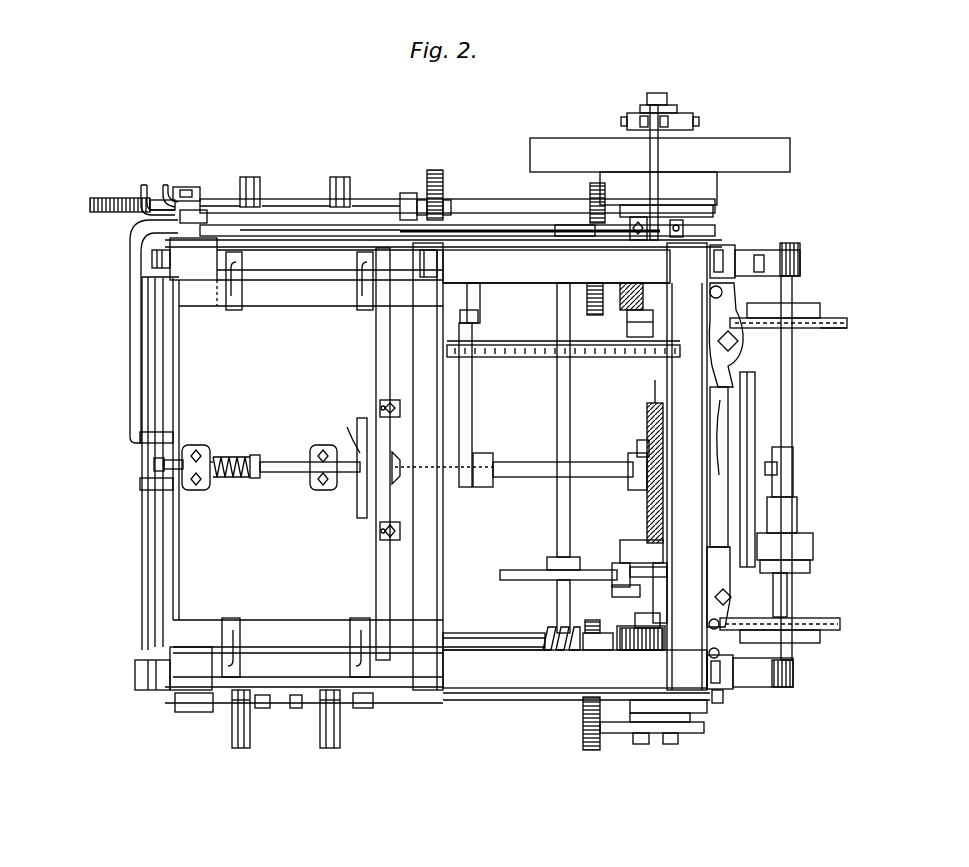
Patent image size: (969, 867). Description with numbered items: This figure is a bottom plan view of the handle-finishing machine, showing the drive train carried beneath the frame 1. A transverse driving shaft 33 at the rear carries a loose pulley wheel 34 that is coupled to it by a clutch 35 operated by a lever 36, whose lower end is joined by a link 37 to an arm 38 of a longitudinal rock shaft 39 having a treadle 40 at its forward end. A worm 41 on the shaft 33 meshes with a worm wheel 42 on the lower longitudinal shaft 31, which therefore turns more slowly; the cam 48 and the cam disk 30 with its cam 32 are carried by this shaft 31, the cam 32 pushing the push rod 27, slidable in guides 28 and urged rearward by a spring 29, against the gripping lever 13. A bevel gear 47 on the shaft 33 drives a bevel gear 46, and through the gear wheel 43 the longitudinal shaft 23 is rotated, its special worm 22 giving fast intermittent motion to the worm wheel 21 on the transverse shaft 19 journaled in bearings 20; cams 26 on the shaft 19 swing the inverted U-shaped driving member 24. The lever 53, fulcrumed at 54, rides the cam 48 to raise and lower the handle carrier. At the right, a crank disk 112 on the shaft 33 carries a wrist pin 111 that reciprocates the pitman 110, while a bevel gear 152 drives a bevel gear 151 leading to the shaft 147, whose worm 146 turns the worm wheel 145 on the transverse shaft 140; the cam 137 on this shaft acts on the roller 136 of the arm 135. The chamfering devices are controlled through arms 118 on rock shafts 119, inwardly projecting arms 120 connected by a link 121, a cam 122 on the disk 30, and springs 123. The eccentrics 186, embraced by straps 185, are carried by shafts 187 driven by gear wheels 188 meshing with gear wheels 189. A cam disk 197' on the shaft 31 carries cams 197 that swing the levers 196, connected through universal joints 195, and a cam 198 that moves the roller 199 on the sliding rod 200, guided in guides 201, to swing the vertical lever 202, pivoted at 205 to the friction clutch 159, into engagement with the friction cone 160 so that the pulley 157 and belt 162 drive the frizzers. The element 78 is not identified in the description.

The frame 1 is at (460, 670).
The gripping lever 13 is at (155, 467).
The transverse shaft 19 is at (148, 577).
The bearings 20 is at (165, 245).
The worm wheel 21 is at (100, 205).
The special worm 22 is at (152, 208).
The longitudinal shaft 23 is at (272, 210).
The inverted U-shaped driving member 24 is at (170, 462).
The cams 26 is at (137, 445).
The push rod 27 is at (285, 473).
The guides 28 is at (308, 460).
The spring 29 is at (228, 478).
The cam disk 30 is at (357, 505).
The lower longitudinal shaft 31 is at (520, 462).
The cam 32 is at (347, 427).
The driving shaft 33 is at (658, 378).
The pulley wheel 34 is at (733, 147).
The clutch 35 is at (718, 190).
The lever 36 is at (657, 112).
The link 37 is at (648, 150).
The arm 38 is at (645, 226).
The rock shaft 39 is at (500, 224).
The treadle 40 is at (158, 302).
The worm 41 is at (638, 450).
The worm wheel 42 is at (795, 246).
The gear wheel 43 is at (433, 170).
The bevel gear 46 is at (628, 300).
The bevel gear 47 is at (637, 310).
The cam 48 is at (470, 412).
The lever 53 is at (465, 320).
The fulcrum 54 is at (478, 283).
The right post 78 is at (665, 367).
The pitman 110 is at (638, 746).
The wrist pin 111 is at (610, 735).
The crank disk 112 is at (668, 746).
The arms 118 is at (232, 300).
The rock shafts 119 is at (300, 262).
The arms 120 is at (376, 352).
The link 121 is at (398, 478).
The cam 122 is at (390, 453).
The retractile springs 123 is at (383, 406).
The arm 135 is at (632, 591).
The roller 136 is at (660, 561).
The cam 137 is at (508, 570).
The transverse shaft 140 is at (557, 594).
The worm wheel 145 is at (546, 630).
The worm 146 is at (556, 655).
The longitudinal shaft 147 is at (484, 660).
The bevel gear 151 is at (614, 650).
The bevel gear 152 is at (660, 624).
The pulley 157 is at (830, 318).
The friction clutch 159 is at (795, 536).
The friction cone 160 is at (787, 578).
The endless belt 162 is at (836, 330).
The eccentric straps 185 is at (248, 177).
The eccentrics 186 is at (222, 725).
The shafts 187 is at (562, 230).
The gear wheels 188 is at (598, 183).
The gear wheels 189 is at (590, 300).
The universal joints 195 is at (725, 292).
The cam operated levers 196 is at (740, 362).
The cams 197 is at (698, 467).
The cam disk 197' is at (793, 469).
The cam 198 is at (792, 423).
The roller 199 is at (800, 561).
The sliding rod 200 is at (717, 705).
The guides 201 is at (720, 273).
The vertical lever 202 is at (793, 473).
The pivot 205 is at (777, 463).